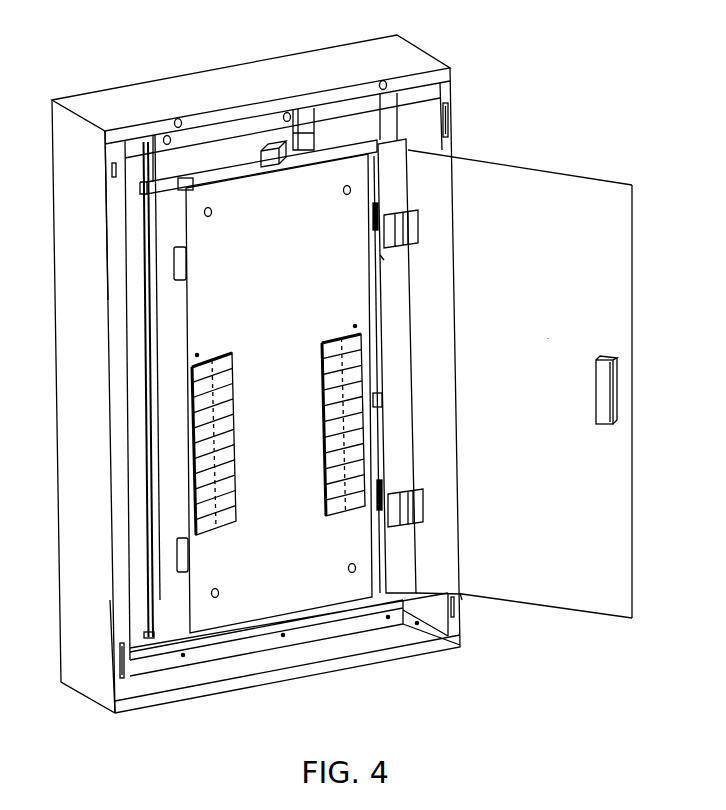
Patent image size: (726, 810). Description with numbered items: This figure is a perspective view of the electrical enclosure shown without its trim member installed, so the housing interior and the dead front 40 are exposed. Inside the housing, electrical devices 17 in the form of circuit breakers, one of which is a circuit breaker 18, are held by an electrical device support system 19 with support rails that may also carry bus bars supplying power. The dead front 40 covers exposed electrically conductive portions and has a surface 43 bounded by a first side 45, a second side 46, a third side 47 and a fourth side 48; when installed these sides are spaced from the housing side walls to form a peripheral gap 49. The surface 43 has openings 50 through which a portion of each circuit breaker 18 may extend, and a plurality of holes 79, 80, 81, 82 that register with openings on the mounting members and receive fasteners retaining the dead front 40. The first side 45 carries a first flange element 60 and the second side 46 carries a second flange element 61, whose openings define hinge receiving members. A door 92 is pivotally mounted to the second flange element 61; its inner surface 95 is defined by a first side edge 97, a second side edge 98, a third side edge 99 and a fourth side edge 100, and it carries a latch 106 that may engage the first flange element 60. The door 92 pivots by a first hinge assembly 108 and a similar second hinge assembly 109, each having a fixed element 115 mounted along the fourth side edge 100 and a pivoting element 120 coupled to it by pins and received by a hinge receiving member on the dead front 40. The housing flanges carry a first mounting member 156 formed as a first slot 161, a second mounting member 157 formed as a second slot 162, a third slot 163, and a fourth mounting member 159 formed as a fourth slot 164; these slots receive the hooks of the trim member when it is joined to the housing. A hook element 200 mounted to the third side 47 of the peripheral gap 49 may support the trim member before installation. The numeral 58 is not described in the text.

The electrical devices 17 is at (278, 394).
The circuit breaker 18 is at (229, 368).
The electrical device support system 19 is at (326, 128).
The dead front 40 is at (245, 665).
The surface 43 is at (305, 502).
The first side 45 is at (145, 182).
The second side 46 is at (379, 140).
The third side 47 is at (233, 165).
The fourth side 48 is at (268, 623).
The peripheral gap 49 is at (58, 101).
The openings 50 is at (326, 440).
The lower corner bracket 58 is at (117, 627).
The first flange element 60 is at (167, 428).
The second flange element 61 is at (398, 428).
The hole 79 is at (218, 212).
The hole 80 is at (340, 190).
The hole 81 is at (221, 592).
The hole 82 is at (347, 570).
The door 92 is at (553, 394).
The inner surface 95 is at (548, 338).
The first side edge 97 is at (577, 175).
The second side edge 98 is at (545, 607).
The third side edge 99 is at (633, 568).
The fourth side edge 100 is at (410, 335).
The latch 106 is at (606, 447).
The first hinge assembly 108 is at (403, 268).
The second hinge assembly 109 is at (415, 545).
The fixed element 115 is at (402, 228).
The pivoting element 120 is at (372, 226).
The first mounting member 156 is at (113, 213).
The second mounting member 157 is at (452, 89).
The fourth mounting member 159 is at (454, 630).
The first slot 161 is at (111, 168).
The second slot 162 is at (452, 140).
The third slot 163 is at (119, 650).
The fourth slot 164 is at (463, 595).
The hook element 200 is at (272, 158).